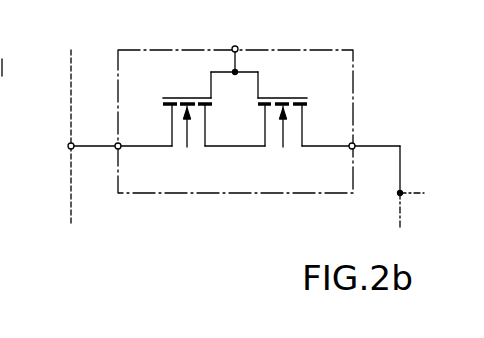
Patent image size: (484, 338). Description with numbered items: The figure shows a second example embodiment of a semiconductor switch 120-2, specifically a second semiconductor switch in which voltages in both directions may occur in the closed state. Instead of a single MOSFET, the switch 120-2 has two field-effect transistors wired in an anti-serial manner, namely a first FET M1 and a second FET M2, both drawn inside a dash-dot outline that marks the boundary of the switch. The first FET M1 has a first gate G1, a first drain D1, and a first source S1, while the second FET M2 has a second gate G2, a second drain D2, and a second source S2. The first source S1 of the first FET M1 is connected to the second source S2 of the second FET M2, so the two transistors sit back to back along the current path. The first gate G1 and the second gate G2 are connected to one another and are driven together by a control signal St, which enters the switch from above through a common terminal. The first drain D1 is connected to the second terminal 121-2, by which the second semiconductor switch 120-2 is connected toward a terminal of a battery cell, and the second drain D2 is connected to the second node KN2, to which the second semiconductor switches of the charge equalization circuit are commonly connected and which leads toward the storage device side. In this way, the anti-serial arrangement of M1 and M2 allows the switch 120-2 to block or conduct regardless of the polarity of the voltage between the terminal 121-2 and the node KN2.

The second semiconductor switch 120-2 is at (356, 86).
The second terminal 121-2 is at (68, 146).
The control signal St is at (238, 47).
The first FET M1 is at (175, 90).
The second FET M2 is at (308, 94).
The first gate G1 is at (195, 83).
The second gate G2 is at (283, 83).
The first drain D1 is at (146, 125).
The second drain D2 is at (328, 127).
The first source S1 is at (235, 125).
The second source S2 is at (253, 125).
The second node KN2 is at (388, 193).